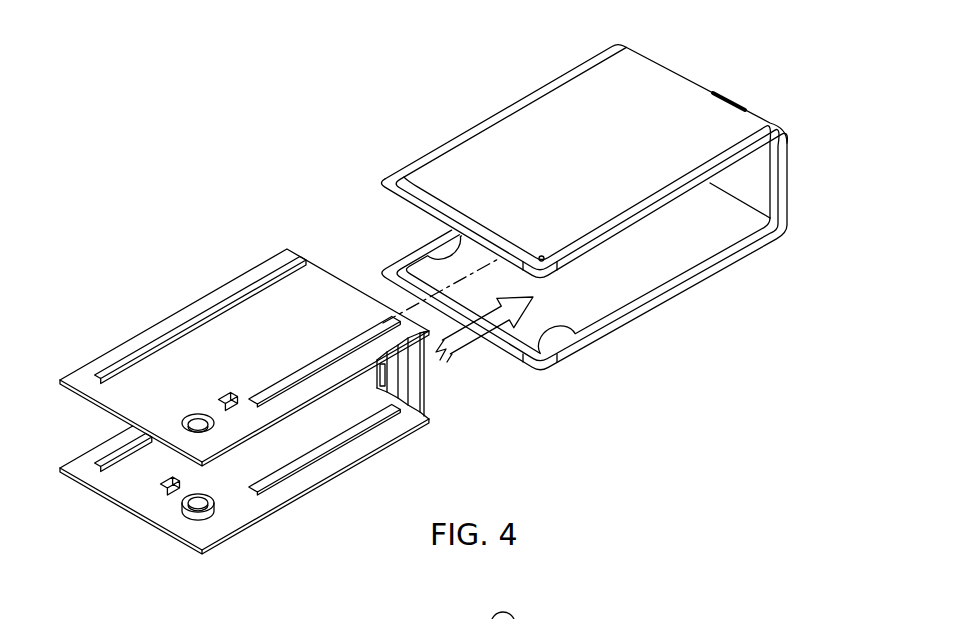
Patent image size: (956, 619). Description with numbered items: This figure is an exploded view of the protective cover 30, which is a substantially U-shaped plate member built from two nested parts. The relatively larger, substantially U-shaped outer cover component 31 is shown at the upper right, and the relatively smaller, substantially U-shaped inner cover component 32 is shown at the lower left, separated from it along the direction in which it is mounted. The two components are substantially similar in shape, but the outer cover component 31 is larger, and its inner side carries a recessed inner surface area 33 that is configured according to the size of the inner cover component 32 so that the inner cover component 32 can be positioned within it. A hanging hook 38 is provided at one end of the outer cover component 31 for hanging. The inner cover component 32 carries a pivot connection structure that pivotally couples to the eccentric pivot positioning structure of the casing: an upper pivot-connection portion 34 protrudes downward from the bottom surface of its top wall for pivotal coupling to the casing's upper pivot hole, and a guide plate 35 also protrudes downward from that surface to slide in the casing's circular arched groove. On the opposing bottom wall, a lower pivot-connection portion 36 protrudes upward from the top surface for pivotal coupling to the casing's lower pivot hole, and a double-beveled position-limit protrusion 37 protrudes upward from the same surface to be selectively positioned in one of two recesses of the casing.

The protective cover 30 is at (327, 211).
The outer cover component 31 is at (500, 137).
The inner cover component 32 is at (218, 347).
The recessed inner surface area 33 is at (436, 264).
The upper pivot-connection portion 34 is at (196, 414).
The guide plate 35 is at (222, 415).
The lower pivot-connection portion 36 is at (207, 512).
The double-beveled position-limit protrusion 37 is at (170, 497).
The hanging hook 38 is at (732, 93).